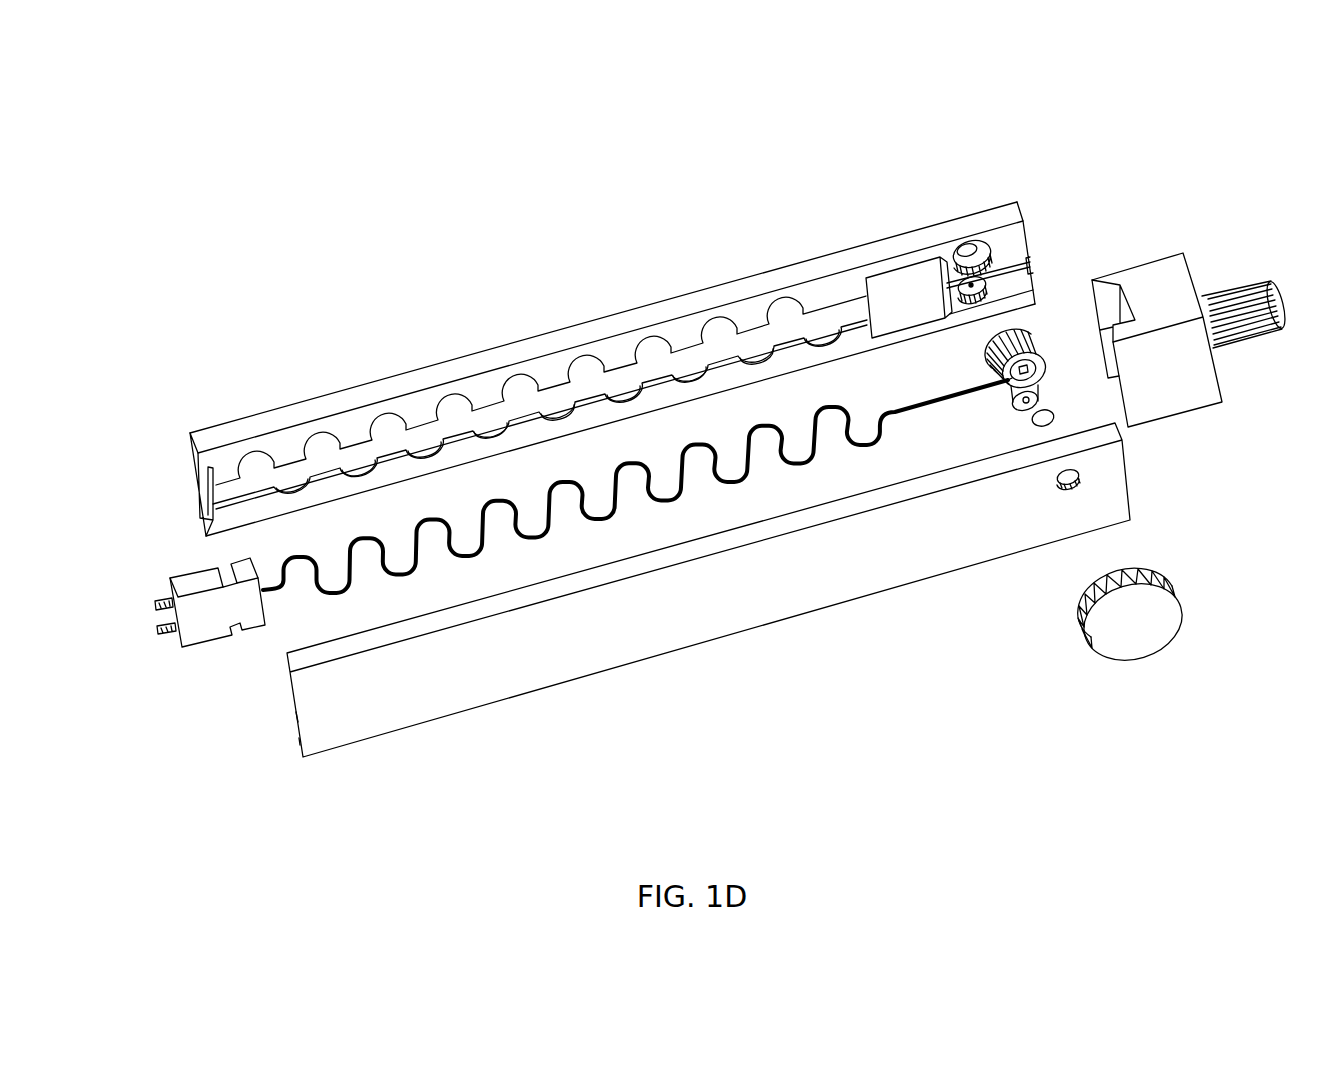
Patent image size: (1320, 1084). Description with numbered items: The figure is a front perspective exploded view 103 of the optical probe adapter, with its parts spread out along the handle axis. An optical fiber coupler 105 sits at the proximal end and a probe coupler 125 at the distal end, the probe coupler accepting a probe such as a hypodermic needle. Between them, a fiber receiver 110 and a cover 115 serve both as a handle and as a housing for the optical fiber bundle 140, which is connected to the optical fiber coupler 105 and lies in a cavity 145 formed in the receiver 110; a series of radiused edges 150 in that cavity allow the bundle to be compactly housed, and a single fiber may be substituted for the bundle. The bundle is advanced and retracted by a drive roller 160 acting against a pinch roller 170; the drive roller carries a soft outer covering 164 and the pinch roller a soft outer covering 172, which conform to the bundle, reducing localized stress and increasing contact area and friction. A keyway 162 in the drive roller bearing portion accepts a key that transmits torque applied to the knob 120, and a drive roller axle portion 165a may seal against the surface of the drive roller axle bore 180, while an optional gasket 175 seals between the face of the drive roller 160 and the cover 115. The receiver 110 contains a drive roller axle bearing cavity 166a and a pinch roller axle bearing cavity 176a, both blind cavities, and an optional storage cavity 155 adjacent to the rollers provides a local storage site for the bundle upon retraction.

The front perspective exploded view 103 is at (1189, 96).
The optical fiber coupler 105 is at (205, 628).
The fiber receiver 110 is at (374, 390).
The cover 115 is at (500, 690).
The knob 120 is at (1140, 640).
The probe coupler 125 is at (1165, 283).
The optical fiber bundle 140 is at (552, 535).
The cavity 145 is at (538, 410).
The radiused edges 150 is at (732, 326).
The storage cavity 155 is at (885, 306).
The drive roller 160 is at (1040, 366).
The keyway 162 is at (1010, 380).
The soft outer covering 164 is at (1025, 340).
The drive roller axle portion 165a is at (1022, 362).
The drive roller axle bearing cavity 166a is at (975, 260).
The pinch roller 170 is at (1013, 404).
The soft outer covering 172 is at (1030, 410).
The gasket 175 is at (1054, 415).
The pinch roller axle bearing cavity 176a is at (978, 290).
The drive roller axle bore 180 is at (1065, 486).